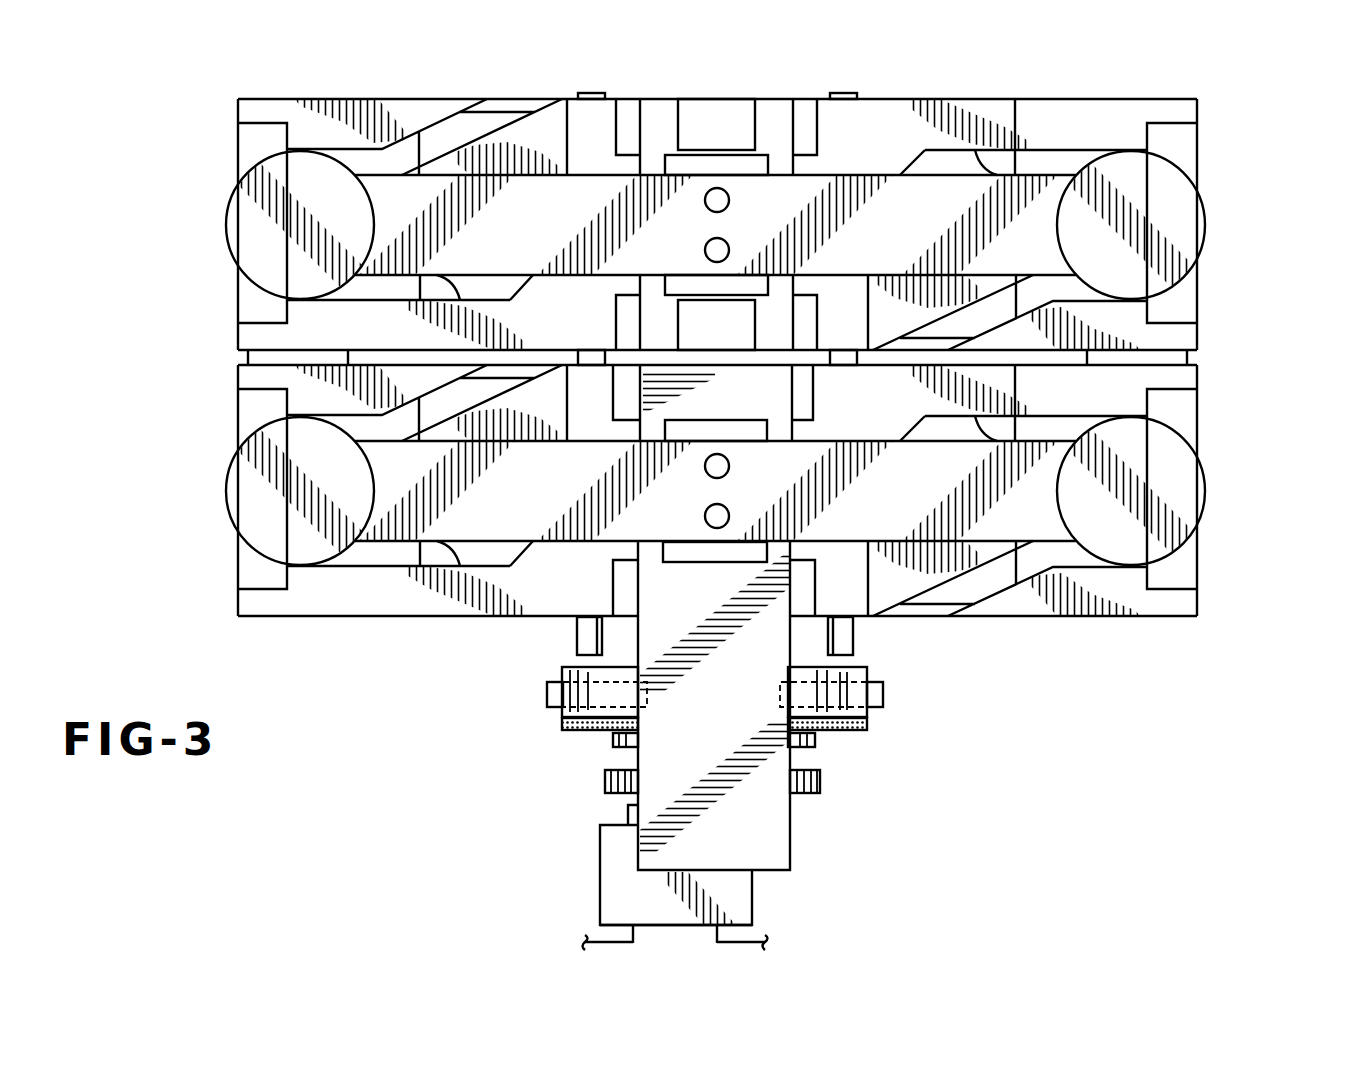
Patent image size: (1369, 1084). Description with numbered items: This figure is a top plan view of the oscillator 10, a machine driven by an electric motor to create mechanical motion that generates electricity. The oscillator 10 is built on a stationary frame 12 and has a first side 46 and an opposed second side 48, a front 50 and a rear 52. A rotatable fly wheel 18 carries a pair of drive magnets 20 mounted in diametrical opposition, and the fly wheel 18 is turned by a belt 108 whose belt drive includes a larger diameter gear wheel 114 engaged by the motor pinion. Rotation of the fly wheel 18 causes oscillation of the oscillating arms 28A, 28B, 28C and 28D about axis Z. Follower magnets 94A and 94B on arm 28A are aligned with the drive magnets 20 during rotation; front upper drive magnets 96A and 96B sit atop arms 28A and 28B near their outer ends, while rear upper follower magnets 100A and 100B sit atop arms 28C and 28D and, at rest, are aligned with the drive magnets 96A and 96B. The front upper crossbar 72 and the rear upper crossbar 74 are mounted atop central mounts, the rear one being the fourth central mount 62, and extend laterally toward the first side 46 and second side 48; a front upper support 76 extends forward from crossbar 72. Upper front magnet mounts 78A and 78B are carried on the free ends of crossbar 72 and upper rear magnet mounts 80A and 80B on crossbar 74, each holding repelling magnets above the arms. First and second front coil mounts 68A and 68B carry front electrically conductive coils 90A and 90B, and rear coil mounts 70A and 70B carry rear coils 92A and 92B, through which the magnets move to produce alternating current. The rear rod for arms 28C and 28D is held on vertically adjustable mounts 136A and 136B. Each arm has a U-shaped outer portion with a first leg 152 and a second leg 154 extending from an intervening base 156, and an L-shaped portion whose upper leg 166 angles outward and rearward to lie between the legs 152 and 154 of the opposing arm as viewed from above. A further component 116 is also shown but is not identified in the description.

The oscillator 10 is at (1012, 792).
The frame 12 is at (792, 849).
The fly wheel 18 is at (573, 732).
The drive magnets 20 is at (547, 693).
The oscillating arm 28A is at (300, 612).
The oscillating arm 28B is at (1152, 612).
The oscillating arm 28C is at (290, 99).
The oscillating arm 28D is at (1148, 99).
The first side 46 is at (175, 348).
The second side 48 is at (1248, 348).
The front 50 is at (789, 912).
The rear 52 is at (878, 94).
The fourth central mount 62 is at (662, 100).
The first front coil mount 68A is at (417, 600).
The second front coil mount 68B is at (997, 600).
The rear coil mount 70A is at (455, 130).
The rear coil mount 70B is at (1000, 160).
The front upper support or crossbar 72 is at (680, 514).
The rear upper support or crossbar 74 is at (534, 239).
The front upper support 76 is at (773, 822).
The upper front magnet mount 78A is at (240, 491).
The upper front magnet mount 78B is at (1196, 490).
The upper rear magnet mount 80A is at (240, 227).
The upper rear magnet mount 80B is at (1196, 225).
The first front electrically conductive coil 90A is at (493, 558).
The second front electrically conductive coil 90B is at (940, 428).
The rear electrically conductive coil 92A is at (493, 290).
The rear electrically conductive coil 92B is at (940, 158).
The follower magnet 94A is at (577, 645).
The follower magnet 94B is at (850, 645).
The front upper drive magnet 96A is at (252, 410).
The front upper drive magnet 96B is at (1197, 410).
The rear upper follower magnet 100A is at (252, 145).
The rear upper follower magnet 100B is at (1197, 145).
The belt 108 is at (868, 722).
The larger diameter gear wheel 114 is at (605, 782).
The base plate 116 is at (612, 873).
The vertically adjustable mount 136A is at (735, 333).
The vertically adjustable mount 136B is at (718, 102).
The first leg 152 is at (1050, 380).
The second leg 154 is at (405, 370).
The intervening base 156 is at (237, 298).
The upper leg 166 is at (527, 140).